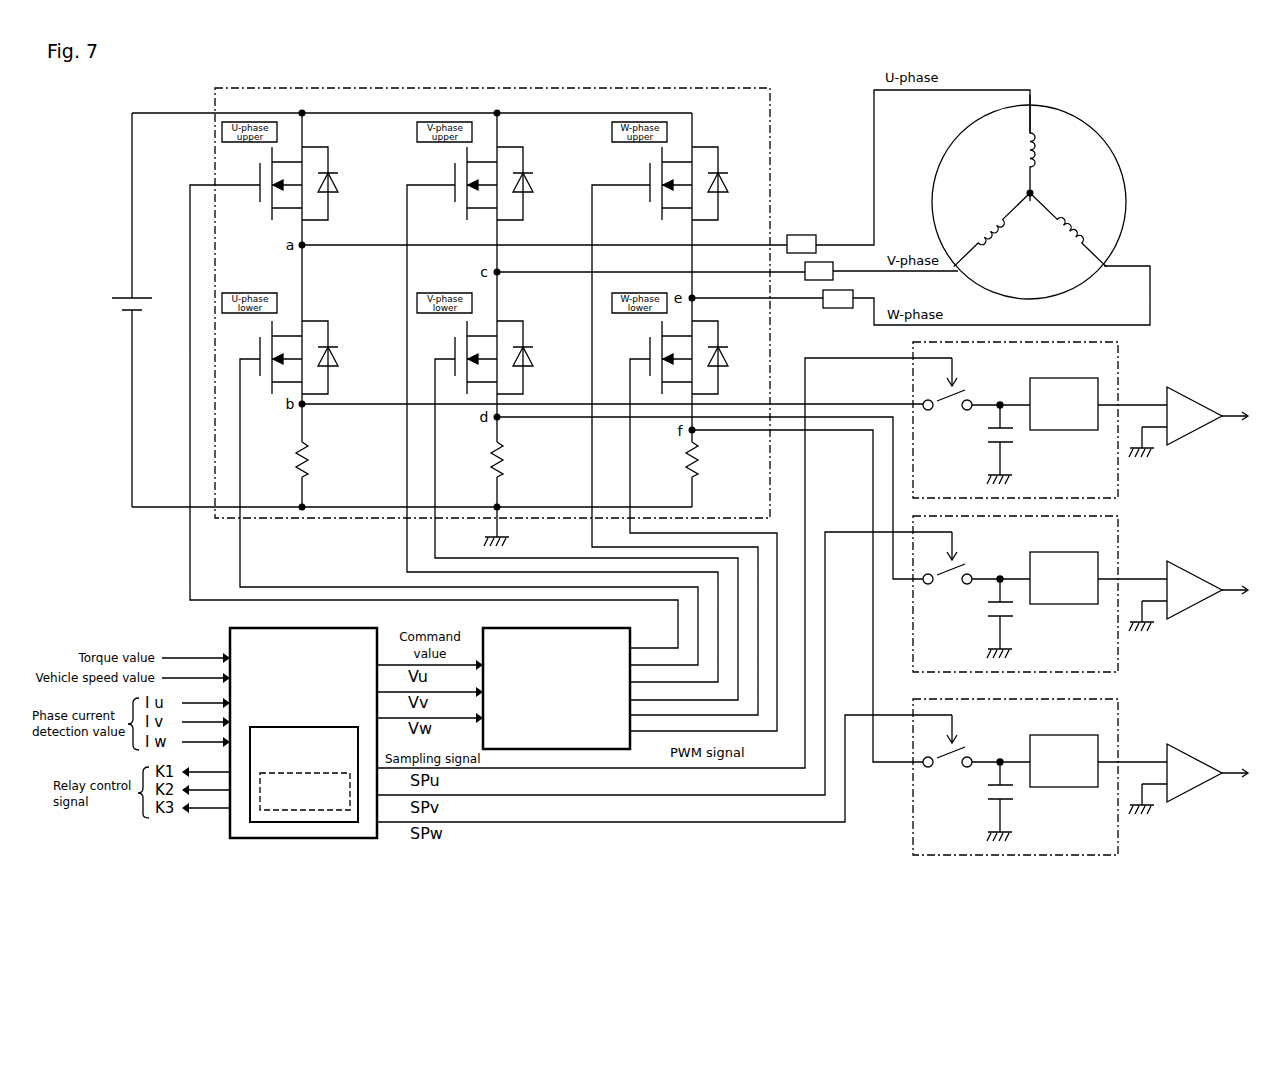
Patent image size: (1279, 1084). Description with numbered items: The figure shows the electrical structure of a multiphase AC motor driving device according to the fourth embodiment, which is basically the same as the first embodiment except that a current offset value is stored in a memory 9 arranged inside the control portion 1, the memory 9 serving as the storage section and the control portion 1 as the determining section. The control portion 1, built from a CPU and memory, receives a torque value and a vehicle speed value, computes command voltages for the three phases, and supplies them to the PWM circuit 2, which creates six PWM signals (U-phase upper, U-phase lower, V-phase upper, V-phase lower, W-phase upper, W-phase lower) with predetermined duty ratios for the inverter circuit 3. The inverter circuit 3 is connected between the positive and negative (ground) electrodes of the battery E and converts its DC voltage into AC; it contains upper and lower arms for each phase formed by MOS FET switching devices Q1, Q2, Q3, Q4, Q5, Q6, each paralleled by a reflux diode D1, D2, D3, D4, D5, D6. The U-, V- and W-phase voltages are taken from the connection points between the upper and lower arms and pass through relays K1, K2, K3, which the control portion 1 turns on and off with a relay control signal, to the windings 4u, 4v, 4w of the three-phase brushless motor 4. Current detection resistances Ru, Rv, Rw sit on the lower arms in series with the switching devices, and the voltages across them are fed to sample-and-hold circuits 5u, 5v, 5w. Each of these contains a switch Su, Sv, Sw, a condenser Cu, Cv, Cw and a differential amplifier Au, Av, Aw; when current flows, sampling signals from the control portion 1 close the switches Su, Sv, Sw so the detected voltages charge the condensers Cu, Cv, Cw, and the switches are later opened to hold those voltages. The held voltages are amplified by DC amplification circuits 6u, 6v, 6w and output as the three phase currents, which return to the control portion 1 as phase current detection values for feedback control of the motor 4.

The control portion 1 is at (292, 721).
The PWM circuit 2 is at (502, 627).
The inverter circuit 3 is at (693, 88).
The three-phase AC motor 4 is at (1053, 197).
The U-phase winding 4u is at (1049, 148).
The V-phase winding 4v is at (994, 231).
The W-phase winding 4w is at (1070, 227).
The sample-and-hold circuit 5u is at (1038, 420).
The sample-and-hold circuit 5v is at (1038, 594).
The sample-and-hold circuit 5w is at (1039, 777).
The DC amplification circuit 6u is at (1202, 402).
The DC amplification circuit 6v is at (1202, 576).
The DC amplification circuit 6w is at (1202, 759).
The memory 9 is at (310, 727).
The switching device Q1 is at (267, 183).
The switching device Q2 is at (265, 357).
The switching device Q3 is at (462, 183).
The switching device Q4 is at (460, 357).
The switching device Q5 is at (657, 183).
The switching device Q6 is at (655, 357).
The reflux diode D1 is at (333, 183).
The reflux diode D2 is at (333, 357).
The reflux diode D3 is at (528, 183).
The reflux diode D4 is at (529, 357).
The reflux diode D5 is at (723, 183).
The reflux diode D6 is at (724, 357).
The current detection resistance Ru is at (316, 459).
The current detection resistance Rv is at (511, 459).
The current detection resistance Rw is at (708, 459).
The relay K1 is at (816, 237).
The relay K2 is at (833, 263).
The relay K3 is at (853, 291).
The battery E is at (118, 307).
The switch Su is at (948, 423).
The switch Sv is at (948, 597).
The switch Sw is at (950, 780).
The condenser Cu is at (975, 455).
The condenser Cv is at (975, 629).
The condenser Cw is at (976, 812).
The differential amplifier Au is at (1063, 405).
The differential amplifier Av is at (1063, 579).
The differential amplifier Aw is at (1063, 762).